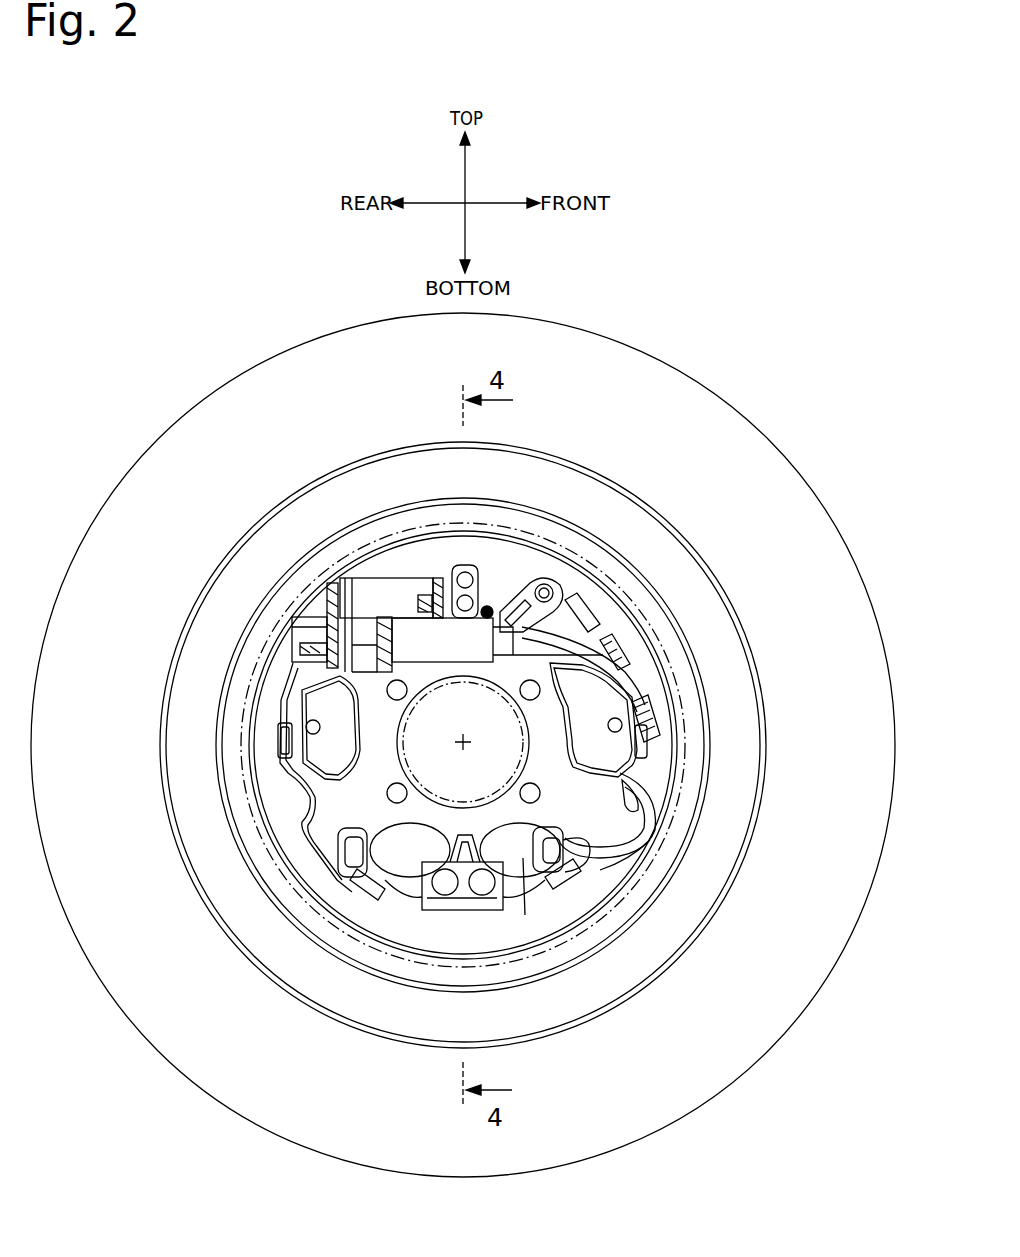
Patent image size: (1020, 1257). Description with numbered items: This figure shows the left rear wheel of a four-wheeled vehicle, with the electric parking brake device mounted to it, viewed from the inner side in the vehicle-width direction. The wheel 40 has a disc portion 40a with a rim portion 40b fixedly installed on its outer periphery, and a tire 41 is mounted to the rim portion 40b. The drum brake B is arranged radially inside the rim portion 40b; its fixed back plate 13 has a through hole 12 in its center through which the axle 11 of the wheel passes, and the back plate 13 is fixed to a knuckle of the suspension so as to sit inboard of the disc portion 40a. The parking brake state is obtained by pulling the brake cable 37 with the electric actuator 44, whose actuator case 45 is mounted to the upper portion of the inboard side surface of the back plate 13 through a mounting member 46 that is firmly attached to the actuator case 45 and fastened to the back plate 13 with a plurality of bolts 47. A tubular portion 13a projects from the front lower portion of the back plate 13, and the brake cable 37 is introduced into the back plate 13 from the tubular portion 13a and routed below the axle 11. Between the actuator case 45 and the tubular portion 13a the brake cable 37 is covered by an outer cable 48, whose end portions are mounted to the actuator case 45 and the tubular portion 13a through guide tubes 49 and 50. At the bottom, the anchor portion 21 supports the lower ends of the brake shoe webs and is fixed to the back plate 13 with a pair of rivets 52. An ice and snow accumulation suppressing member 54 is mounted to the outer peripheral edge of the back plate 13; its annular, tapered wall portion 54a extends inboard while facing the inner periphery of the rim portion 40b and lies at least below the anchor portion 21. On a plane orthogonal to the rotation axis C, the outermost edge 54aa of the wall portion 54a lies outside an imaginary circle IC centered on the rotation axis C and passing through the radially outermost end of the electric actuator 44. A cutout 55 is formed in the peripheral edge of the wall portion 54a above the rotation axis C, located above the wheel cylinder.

The tire 41 is at (684, 386).
The wheel 40 is at (695, 540).
The disc portion 40a is at (716, 686).
The rim portion 40b is at (743, 606).
The cutout 55 is at (495, 521).
The brake cable 37 is at (681, 715).
The imaginary circle IC is at (416, 962).
The axle 11 is at (407, 768).
The rotation axis C is at (470, 746).
The through hole 12 is at (541, 792).
The electric actuator 44 is at (407, 570).
The actuator case 45 is at (367, 588).
The guide tube 49 is at (510, 650).
The back plate 13 is at (504, 568).
The tubular portion 13a is at (523, 858).
The bolts 47 is at (549, 608).
The mounting member 46 is at (583, 636).
The ice and snow accumulation suppressing member 54 is at (254, 825).
The wall portion 54a is at (305, 868).
The outermost edge 54aa is at (366, 935).
The outer cable 48 is at (660, 770).
The guide tube 50 is at (562, 872).
The drum brake B is at (596, 871).
The anchor portion 21 is at (492, 905).
The rivets 52 is at (482, 885).